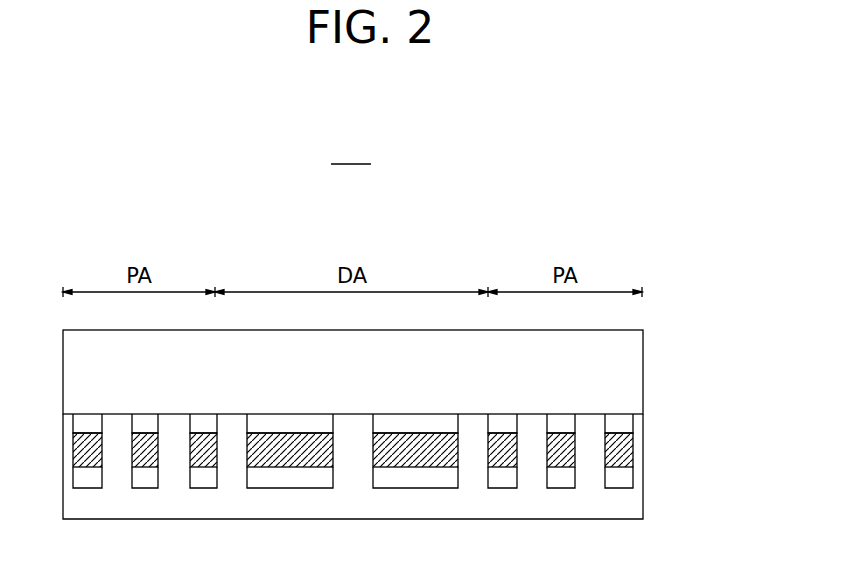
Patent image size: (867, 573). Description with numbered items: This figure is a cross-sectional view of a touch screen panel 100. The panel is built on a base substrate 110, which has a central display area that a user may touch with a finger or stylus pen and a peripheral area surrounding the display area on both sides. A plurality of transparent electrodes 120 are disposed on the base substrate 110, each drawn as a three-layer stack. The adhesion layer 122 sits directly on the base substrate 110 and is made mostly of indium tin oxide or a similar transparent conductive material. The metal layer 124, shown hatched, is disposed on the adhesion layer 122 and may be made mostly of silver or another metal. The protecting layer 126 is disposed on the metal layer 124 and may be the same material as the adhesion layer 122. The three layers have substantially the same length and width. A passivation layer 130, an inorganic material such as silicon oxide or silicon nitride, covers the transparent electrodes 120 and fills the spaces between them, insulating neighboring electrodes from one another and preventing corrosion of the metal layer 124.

The touch screen panel 100 is at (351, 151).
The base substrate 110 is at (636, 367).
The transparent electrodes 120 is at (425, 444).
The adhesion layer 122 is at (627, 420).
The metal layer 124 is at (627, 447).
The protecting layer 126 is at (627, 475).
The passivation layer 130 is at (636, 505).